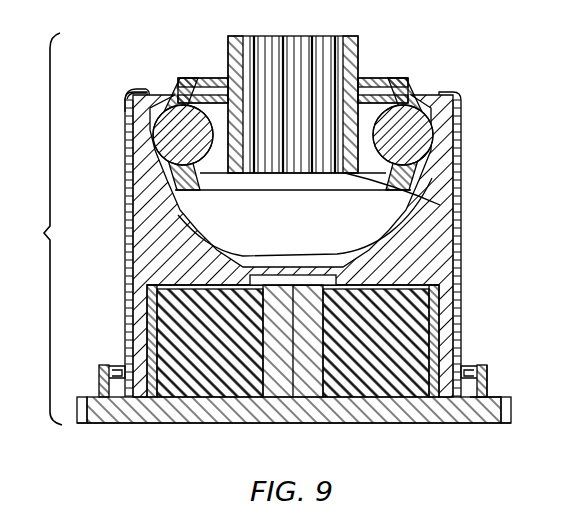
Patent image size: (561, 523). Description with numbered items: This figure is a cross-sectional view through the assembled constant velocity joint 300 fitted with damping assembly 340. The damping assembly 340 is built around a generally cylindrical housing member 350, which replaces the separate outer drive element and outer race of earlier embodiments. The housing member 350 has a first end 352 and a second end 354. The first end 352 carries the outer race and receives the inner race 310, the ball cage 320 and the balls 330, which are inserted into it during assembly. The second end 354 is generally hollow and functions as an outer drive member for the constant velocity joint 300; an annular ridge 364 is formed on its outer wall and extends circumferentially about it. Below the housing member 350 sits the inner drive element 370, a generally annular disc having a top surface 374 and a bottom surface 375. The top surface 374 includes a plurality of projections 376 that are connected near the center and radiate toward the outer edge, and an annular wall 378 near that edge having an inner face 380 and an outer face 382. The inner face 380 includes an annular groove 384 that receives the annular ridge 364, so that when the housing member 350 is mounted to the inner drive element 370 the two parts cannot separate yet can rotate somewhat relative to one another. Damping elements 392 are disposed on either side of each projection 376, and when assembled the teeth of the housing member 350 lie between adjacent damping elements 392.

The constant velocity joint 300 is at (486, 72).
The inner race 310 is at (421, 208).
The ball cage 320 is at (407, 86).
The balls 330 is at (404, 148).
The damping assembly 340 is at (33, 229).
The housing member 350 is at (128, 200).
The first end 352 is at (127, 105).
The second end 354 is at (126, 367).
The annular ridge 364 is at (122, 368).
The inner drive element 370 is at (373, 425).
The top surface 374 is at (90, 390).
The bottom surface 375 is at (437, 425).
The projections 376 is at (280, 383).
The annular wall 378 is at (480, 365).
The inner face 380 is at (480, 385).
The outer face 382 is at (490, 380).
The annular groove 384 is at (118, 405).
The damping elements 392 is at (198, 392).